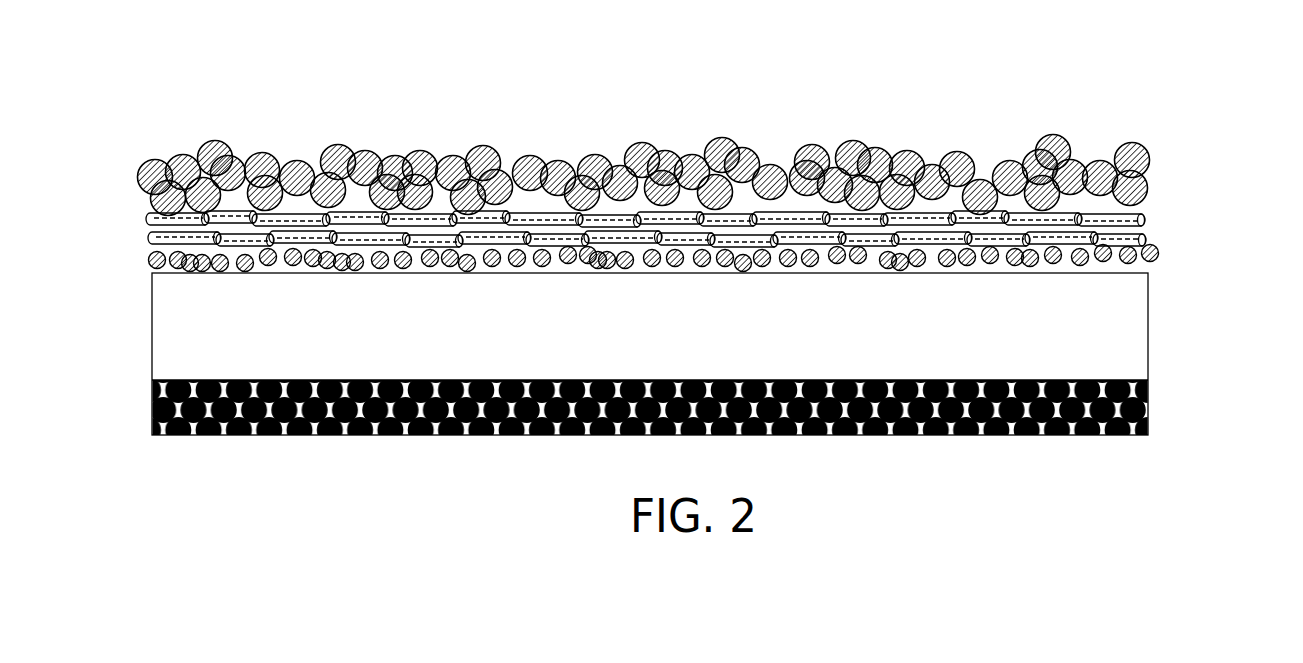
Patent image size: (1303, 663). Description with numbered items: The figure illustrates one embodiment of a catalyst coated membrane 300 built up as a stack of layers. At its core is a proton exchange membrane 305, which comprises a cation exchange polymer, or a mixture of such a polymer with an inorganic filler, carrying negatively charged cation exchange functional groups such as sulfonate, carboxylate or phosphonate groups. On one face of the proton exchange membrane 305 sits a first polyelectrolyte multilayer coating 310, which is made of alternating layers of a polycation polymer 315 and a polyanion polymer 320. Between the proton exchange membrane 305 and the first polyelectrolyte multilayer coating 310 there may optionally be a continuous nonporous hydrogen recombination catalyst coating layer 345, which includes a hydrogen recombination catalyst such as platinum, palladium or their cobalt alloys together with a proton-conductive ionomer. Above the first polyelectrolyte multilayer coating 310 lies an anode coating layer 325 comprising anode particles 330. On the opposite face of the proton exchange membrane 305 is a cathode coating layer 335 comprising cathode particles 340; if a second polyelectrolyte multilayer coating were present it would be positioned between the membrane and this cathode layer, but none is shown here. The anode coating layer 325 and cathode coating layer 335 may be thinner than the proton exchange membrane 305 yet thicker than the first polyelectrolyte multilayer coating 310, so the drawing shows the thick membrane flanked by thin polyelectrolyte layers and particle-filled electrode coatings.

The catalyst coated membrane 300 is at (1214, 79).
The proton exchange membrane 305 is at (138, 313).
The first polyelectrolyte multilayer coating 310 is at (137, 207).
The polycation polymer 315 is at (1150, 243).
The polyanion polymer 320 is at (1148, 207).
The anode coating layer 325 is at (140, 168).
The anode particles 330 is at (1143, 149).
The cathode coating layer 335 is at (152, 405).
The cathode particles 340 is at (1148, 385).
The hydrogen recombination catalyst coating layer 345 is at (150, 259).